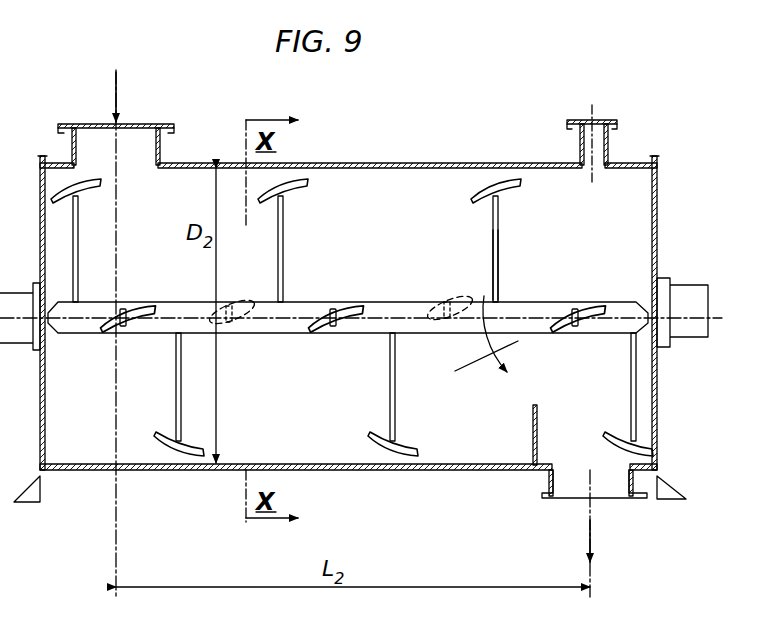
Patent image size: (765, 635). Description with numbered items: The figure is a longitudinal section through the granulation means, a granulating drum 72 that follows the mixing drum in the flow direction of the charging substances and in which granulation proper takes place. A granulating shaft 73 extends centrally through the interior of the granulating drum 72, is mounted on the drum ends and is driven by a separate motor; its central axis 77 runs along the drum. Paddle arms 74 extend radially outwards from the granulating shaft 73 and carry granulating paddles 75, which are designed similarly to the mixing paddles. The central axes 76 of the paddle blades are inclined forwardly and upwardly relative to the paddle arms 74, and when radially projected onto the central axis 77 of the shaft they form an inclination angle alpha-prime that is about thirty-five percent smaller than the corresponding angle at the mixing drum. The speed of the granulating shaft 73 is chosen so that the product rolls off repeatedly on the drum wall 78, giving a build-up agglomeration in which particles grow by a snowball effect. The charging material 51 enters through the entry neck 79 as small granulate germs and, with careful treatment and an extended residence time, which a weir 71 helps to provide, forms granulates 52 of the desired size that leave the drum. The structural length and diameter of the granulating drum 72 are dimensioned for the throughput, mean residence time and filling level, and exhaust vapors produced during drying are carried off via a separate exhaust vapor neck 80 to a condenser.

The inlet material flow 51 is at (113, 98).
The granulates 52 is at (588, 526).
The weir 71 is at (538, 416).
The granulating drum 72 is at (417, 158).
The granulating shaft 73 is at (400, 306).
The paddle arms 74 is at (498, 256).
The granulating paddles 75 is at (498, 186).
The central axes of the paddle blades 76 is at (513, 339).
The central axis of the granulating shaft 77 is at (314, 312).
The drum wall 78 is at (312, 164).
The entry neck 79 is at (128, 135).
The exhaust vapor neck 80 is at (608, 140).